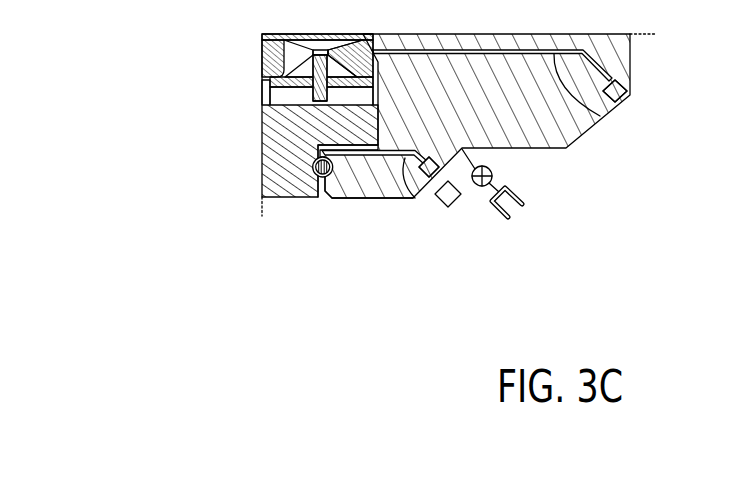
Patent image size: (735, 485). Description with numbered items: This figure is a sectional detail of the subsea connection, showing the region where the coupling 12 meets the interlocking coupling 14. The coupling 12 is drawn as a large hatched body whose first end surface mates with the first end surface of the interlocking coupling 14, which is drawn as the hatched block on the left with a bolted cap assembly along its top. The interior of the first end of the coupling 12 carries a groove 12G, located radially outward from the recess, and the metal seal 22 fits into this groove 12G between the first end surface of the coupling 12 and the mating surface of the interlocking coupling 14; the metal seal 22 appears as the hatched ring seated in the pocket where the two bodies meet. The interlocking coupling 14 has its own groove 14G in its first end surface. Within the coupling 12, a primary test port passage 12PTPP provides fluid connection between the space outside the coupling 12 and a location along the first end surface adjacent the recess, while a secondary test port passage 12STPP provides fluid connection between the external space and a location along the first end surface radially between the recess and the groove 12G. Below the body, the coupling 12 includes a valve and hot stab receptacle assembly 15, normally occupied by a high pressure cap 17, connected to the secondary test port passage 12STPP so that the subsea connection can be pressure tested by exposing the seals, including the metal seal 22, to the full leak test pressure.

The coupling 12 is at (576, 148).
The groove 12G is at (351, 171).
The secondary test port passage 12STPP is at (413, 198).
The primary test port passage 12PTPP is at (602, 112).
The interlocking coupling 14 is at (279, 140).
The groove 14G is at (279, 163).
The metal seal 22 is at (308, 163).
The high pressure cap 17 is at (458, 204).
The valve and hot stab receptacle assembly 15 is at (517, 213).